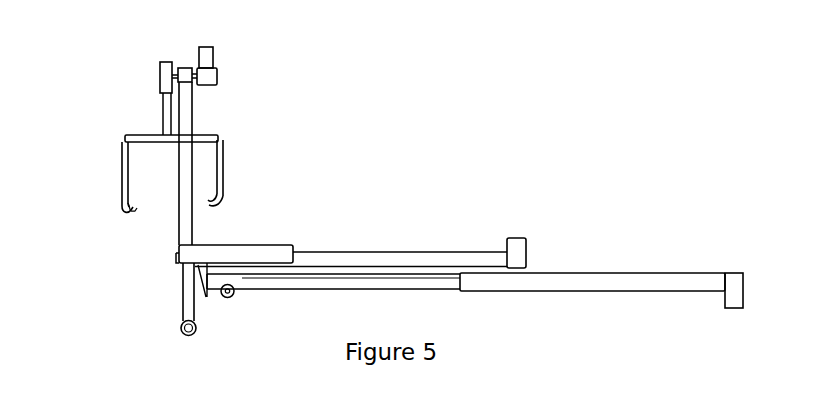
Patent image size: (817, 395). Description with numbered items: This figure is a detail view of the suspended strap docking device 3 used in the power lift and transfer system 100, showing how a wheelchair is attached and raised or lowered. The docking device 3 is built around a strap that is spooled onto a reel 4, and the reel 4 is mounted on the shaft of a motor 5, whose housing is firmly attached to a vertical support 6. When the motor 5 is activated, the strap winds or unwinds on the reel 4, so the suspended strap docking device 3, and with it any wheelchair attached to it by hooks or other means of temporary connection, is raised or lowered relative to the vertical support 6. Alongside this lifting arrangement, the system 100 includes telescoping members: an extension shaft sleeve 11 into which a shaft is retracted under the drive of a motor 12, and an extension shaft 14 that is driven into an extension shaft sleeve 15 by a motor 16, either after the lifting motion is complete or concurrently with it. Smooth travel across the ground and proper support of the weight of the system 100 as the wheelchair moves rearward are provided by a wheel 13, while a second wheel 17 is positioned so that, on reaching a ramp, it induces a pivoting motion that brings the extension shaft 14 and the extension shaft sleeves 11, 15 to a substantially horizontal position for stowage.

The power lift and transfer system 100 is at (635, 173).
The suspended strap docking device 3 is at (122, 182).
The reel 4 is at (158, 68).
The motor 5 is at (208, 54).
The vertical support 6 is at (193, 101).
The extension shaft sleeve 11 is at (408, 260).
The motor 12 is at (515, 243).
The wheel 13 is at (172, 335).
The extension shaft 14 is at (302, 281).
The extension shaft sleeve 15 is at (610, 288).
The motor 16 is at (732, 287).
The wheel 17 is at (230, 298).